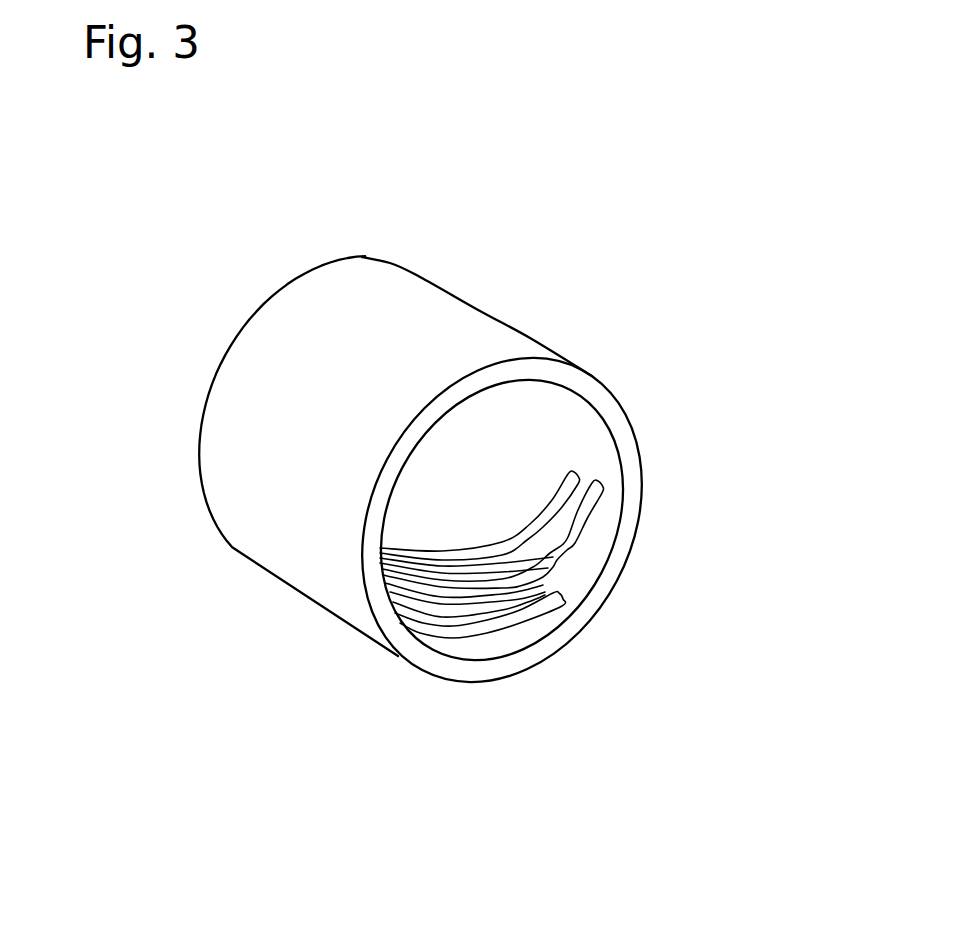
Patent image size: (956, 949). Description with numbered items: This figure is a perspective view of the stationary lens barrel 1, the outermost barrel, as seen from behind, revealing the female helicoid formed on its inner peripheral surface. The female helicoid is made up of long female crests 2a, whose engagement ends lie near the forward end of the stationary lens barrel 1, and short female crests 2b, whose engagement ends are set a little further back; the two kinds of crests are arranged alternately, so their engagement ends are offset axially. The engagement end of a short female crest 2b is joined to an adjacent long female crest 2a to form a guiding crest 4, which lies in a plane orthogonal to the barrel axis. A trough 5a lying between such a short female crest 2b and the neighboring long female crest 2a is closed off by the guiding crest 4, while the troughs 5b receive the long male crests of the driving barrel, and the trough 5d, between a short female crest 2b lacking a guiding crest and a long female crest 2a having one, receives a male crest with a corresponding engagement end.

The stationary lens barrel 1 is at (440, 323).
The long female crests 2a is at (590, 505).
The short female crests 2b is at (572, 477).
The guiding crest 4 is at (567, 565).
The troughs 5a is at (428, 592).
The troughs 5b is at (484, 619).
The trough 5d is at (518, 556).